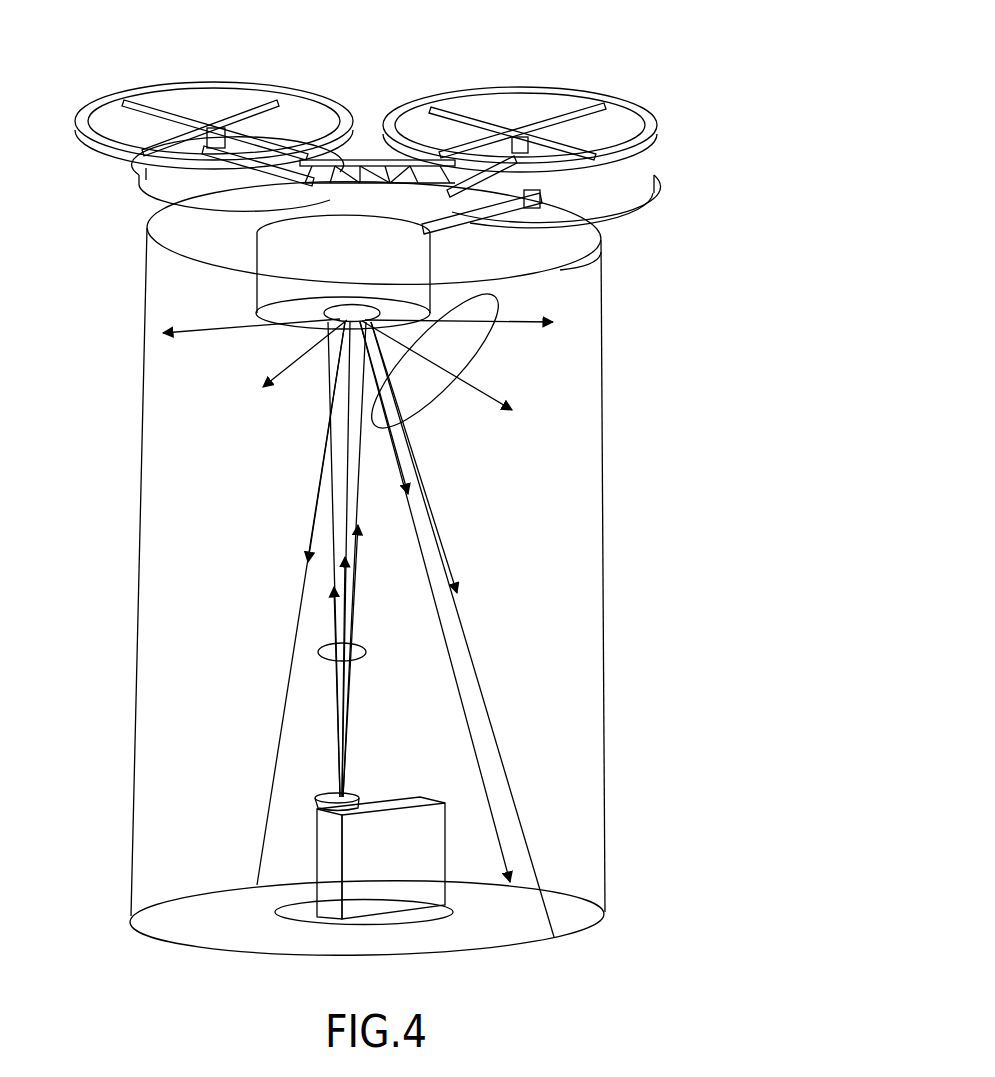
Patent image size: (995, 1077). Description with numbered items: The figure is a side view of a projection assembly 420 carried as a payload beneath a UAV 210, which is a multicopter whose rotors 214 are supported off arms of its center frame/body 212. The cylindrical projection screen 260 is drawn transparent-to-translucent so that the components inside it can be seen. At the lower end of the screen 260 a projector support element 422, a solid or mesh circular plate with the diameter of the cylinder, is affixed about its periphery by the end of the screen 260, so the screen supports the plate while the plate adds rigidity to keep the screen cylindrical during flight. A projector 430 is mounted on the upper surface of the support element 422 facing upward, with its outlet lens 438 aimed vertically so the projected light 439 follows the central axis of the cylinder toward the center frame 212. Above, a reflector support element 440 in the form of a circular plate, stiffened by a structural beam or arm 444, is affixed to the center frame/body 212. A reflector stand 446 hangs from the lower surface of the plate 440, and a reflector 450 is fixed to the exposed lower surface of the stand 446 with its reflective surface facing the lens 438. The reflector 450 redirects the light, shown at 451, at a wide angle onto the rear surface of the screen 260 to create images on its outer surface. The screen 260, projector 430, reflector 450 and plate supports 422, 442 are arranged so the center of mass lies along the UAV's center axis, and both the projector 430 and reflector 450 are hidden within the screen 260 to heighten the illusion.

The UAV 210 is at (630, 80).
The center frame/body 212 is at (372, 130).
The rotors 214 is at (625, 205).
The projection screen 260 is at (637, 563).
The projection assembly 420 is at (83, 937).
The projector support element 422 is at (549, 943).
The projector 430 is at (410, 790).
The outlet lens 438 is at (356, 797).
The projected light 439 is at (365, 658).
The reflector support element / circular plate 440 is at (606, 256).
The plate support 442 is at (580, 267).
The structural beam or arm 444 is at (496, 221).
The reflector stand 446 is at (334, 266).
The reflector 450 is at (352, 310).
The redirected/reflected light 451 is at (497, 300).